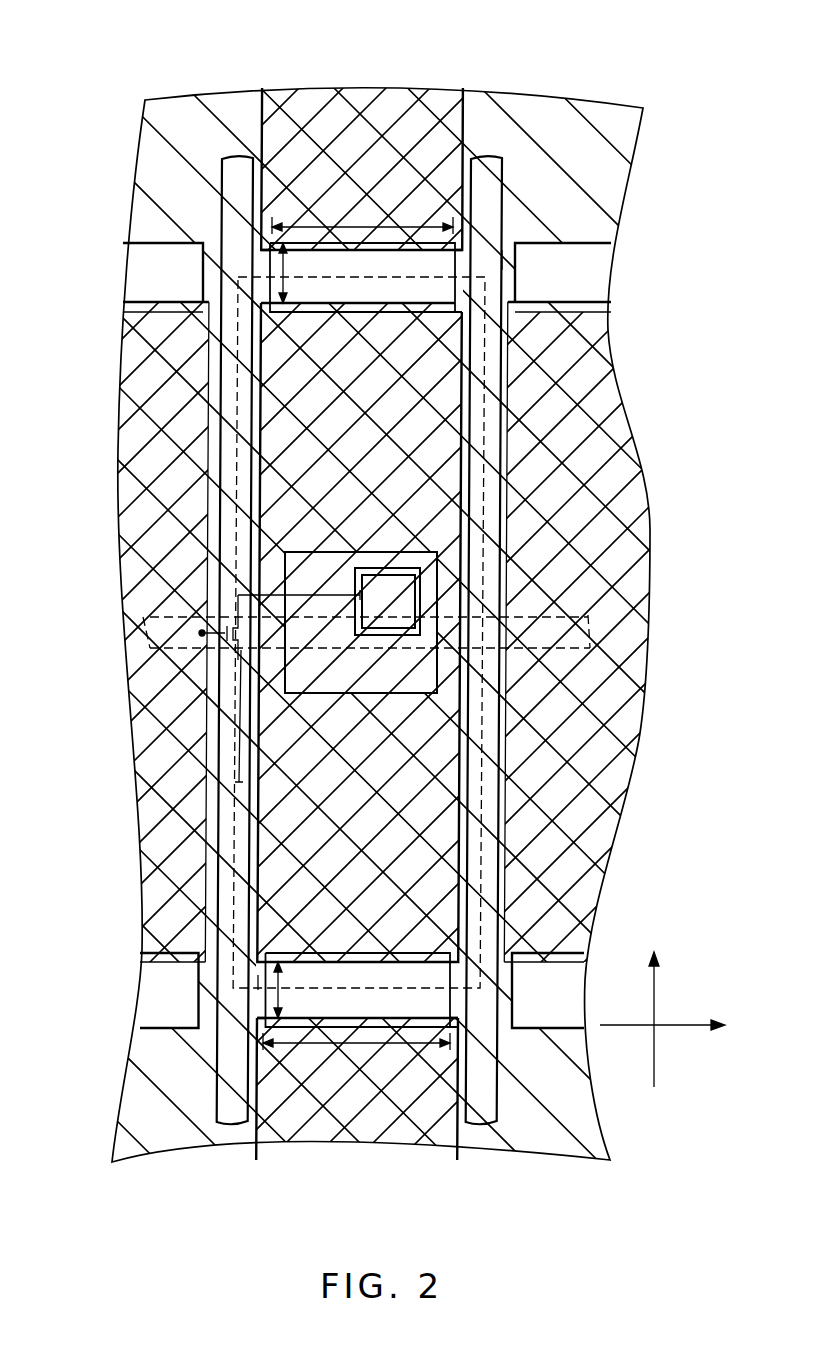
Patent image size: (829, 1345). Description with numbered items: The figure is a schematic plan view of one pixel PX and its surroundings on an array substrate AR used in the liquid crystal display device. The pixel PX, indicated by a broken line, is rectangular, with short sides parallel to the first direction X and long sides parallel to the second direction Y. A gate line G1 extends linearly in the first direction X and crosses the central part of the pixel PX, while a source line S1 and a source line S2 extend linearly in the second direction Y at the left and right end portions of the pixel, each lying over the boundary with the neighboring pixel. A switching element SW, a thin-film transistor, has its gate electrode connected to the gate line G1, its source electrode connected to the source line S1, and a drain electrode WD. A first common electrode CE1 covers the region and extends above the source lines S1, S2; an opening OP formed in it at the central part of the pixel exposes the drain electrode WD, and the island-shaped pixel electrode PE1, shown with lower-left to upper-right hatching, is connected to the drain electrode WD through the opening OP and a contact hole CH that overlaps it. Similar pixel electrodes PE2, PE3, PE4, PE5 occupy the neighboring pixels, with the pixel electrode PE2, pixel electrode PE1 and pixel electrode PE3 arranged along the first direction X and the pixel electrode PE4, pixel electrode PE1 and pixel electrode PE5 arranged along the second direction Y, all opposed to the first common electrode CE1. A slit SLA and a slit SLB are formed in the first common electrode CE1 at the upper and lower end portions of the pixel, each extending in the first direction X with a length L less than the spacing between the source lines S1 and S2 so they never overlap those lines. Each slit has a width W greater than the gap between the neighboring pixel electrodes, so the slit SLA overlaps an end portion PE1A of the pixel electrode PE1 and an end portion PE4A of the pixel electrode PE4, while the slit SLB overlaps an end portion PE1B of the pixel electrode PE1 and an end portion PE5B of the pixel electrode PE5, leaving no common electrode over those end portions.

The pixel electrode PE1 is at (441, 410).
The pixel electrode PE2 is at (168, 300).
The pixel electrode PE3 is at (570, 300).
The pixel electrode PE4 is at (262, 126).
The pixel electrode PE5 is at (256, 1132).
The end portion of pixel electrode PE1 PE1A is at (490, 270).
The end portion of pixel electrode PE1 PE1B is at (413, 1010).
The end portion of pixel electrode PE4 PE4A is at (399, 266).
The end portion of pixel electrode PE5 PE5B is at (364, 970).
The first common electrode CE1 is at (640, 538).
The source line S1 is at (234, 158).
The source line S2 is at (490, 158).
The gate line G1 is at (148, 640).
The switching element SW is at (227, 607).
The drain electrode WD is at (420, 585).
The contact hole CH is at (408, 603).
The opening OP is at (437, 693).
The pixel PX is at (415, 297).
The array substrate AR is at (625, 262).
The slit SLA is at (503, 258).
The slit SLB is at (264, 982).
The width W is at (282, 993).
The length L is at (376, 1046).
The first direction X is at (674, 1025).
The second direction Y is at (653, 1004).